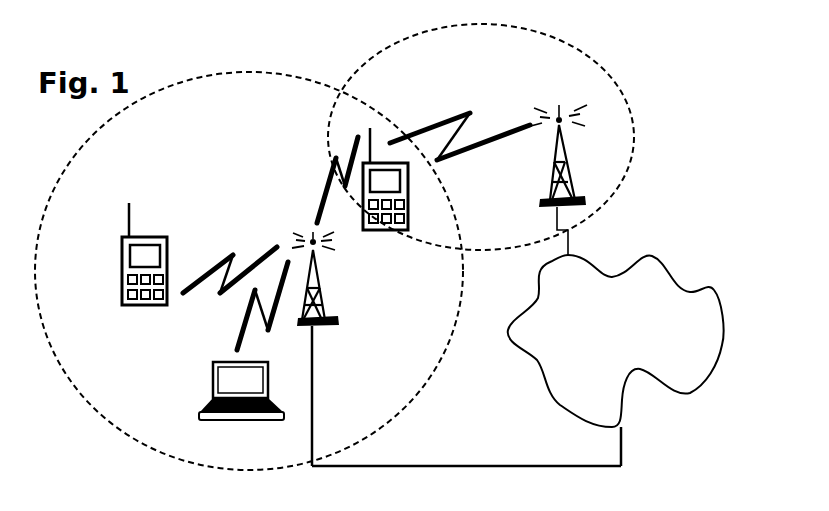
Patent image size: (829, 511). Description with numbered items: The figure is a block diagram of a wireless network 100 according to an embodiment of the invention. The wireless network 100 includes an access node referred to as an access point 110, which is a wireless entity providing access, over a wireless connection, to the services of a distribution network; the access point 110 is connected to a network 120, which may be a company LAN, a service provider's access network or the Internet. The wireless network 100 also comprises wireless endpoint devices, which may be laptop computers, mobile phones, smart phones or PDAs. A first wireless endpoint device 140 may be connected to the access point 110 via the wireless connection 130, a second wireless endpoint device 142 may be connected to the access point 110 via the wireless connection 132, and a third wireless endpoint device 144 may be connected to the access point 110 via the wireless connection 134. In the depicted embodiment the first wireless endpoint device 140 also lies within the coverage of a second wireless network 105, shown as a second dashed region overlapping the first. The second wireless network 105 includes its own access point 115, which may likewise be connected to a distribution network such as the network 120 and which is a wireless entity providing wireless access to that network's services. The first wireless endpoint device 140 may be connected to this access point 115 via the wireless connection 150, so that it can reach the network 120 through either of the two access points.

The wireless network 100 is at (413, 357).
The second wireless network 105 is at (607, 178).
The access point 110 is at (340, 349).
The access point 115 is at (577, 180).
The network 120 is at (578, 343).
The wireless connection 130 is at (317, 180).
The wireless connection 132 is at (230, 262).
The wireless connection 134 is at (242, 306).
The first wireless endpoint device 140 is at (387, 198).
The second wireless endpoint device 142 is at (116, 254).
The third wireless endpoint device 144 is at (241, 410).
The wireless connection 150 is at (460, 126).